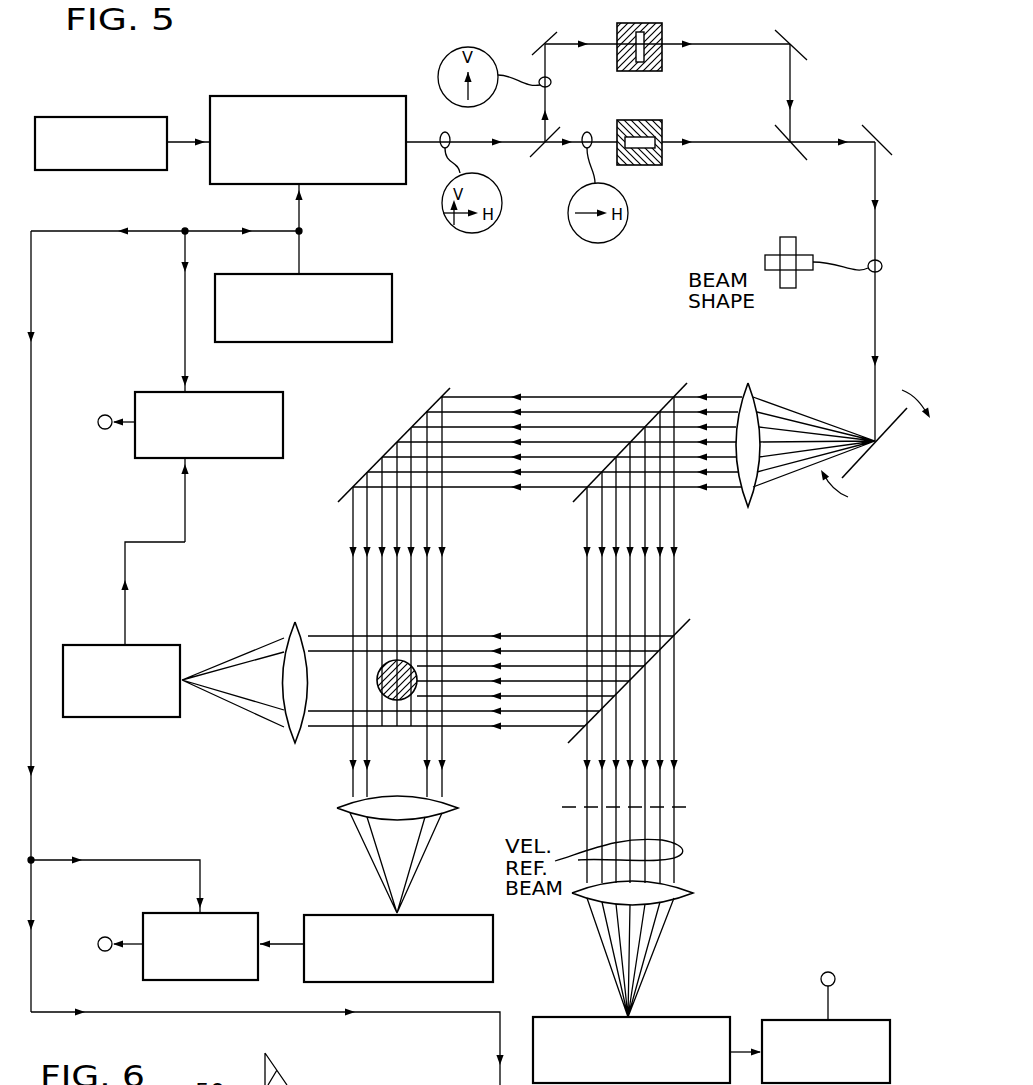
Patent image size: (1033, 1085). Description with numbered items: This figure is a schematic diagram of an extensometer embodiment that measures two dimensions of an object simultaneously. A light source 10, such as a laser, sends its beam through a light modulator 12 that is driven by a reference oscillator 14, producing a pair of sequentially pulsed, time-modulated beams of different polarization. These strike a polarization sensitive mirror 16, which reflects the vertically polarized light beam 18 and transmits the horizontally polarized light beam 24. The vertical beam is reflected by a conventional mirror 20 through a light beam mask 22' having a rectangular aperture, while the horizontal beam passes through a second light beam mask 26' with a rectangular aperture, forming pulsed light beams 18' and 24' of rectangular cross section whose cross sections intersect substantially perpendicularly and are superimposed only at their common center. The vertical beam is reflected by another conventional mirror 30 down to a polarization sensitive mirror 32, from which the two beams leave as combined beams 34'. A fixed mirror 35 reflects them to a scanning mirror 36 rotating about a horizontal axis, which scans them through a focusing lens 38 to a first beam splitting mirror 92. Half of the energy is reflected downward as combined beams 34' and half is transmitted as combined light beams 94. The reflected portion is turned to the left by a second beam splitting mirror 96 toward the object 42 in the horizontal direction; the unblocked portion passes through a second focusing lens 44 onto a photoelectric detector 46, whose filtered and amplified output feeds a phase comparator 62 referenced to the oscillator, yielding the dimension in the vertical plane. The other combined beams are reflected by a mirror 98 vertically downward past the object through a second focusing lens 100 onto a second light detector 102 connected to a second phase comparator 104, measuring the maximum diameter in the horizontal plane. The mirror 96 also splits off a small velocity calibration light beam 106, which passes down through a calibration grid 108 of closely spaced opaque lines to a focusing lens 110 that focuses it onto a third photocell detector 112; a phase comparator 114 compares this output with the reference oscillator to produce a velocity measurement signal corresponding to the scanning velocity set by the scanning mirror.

The light source 10 is at (96, 117).
The light modulator 12 is at (277, 96).
The reference oscillator 14 is at (347, 274).
The polarization sensitive mirror 16 is at (536, 148).
The vertically polarized light beam 18 is at (525, 93).
The pulsed light beam of rectangular cross section 18' is at (694, 131).
The conventional mirror 20 is at (533, 52).
The light beam mask 22' is at (618, 35).
The horizontally polarized light beam 24 is at (581, 165).
The pulsed light beam of rectangular cross section 24' is at (726, 189).
The light beam mask 26' is at (619, 128).
The conventional mirror 30 is at (798, 42).
The polarization sensitive mirror 32 is at (789, 148).
The combined beams 34' is at (620, 469).
The fixed mirror 35 is at (870, 130).
The scanning mirror 36 is at (893, 432).
The focusing lens 38 is at (753, 492).
The object 42 is at (393, 692).
The second focusing lens 44 is at (290, 630).
The photoelectric detector 46 is at (90, 645).
The phase comparator 62 is at (286, 415).
The first beam splitting mirror 92 is at (664, 392).
The combined light beams 94 is at (588, 397).
The second beam splitting mirror 96 is at (687, 630).
The mirror 98 is at (418, 420).
The second focusing lens 100 is at (345, 810).
The second light detector 102 is at (338, 915).
The second phase comparator 104 is at (233, 913).
The velocity calibration light beam 106 is at (678, 698).
The calibration grid 108 is at (693, 807).
The focusing lens 110 is at (683, 895).
The third photocell detector 112 is at (697, 1017).
The phase comparator 114 is at (777, 1020).